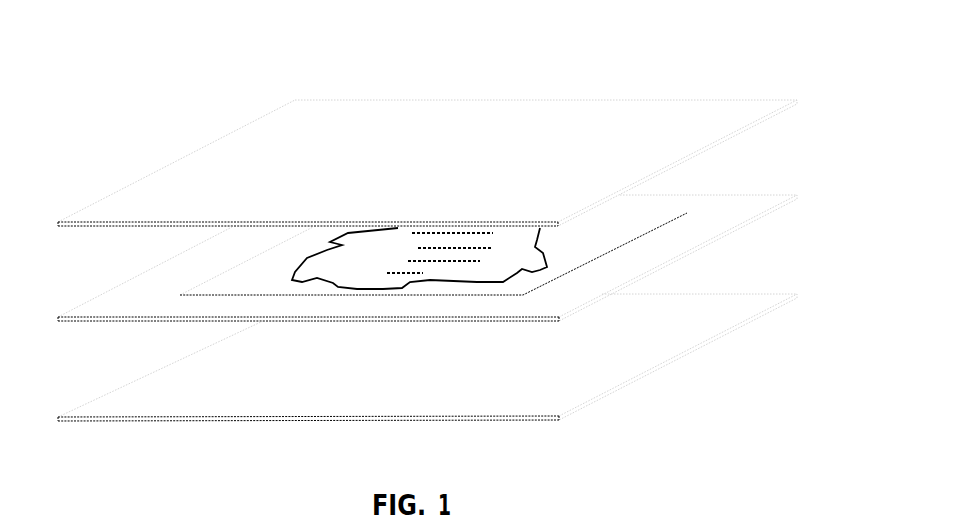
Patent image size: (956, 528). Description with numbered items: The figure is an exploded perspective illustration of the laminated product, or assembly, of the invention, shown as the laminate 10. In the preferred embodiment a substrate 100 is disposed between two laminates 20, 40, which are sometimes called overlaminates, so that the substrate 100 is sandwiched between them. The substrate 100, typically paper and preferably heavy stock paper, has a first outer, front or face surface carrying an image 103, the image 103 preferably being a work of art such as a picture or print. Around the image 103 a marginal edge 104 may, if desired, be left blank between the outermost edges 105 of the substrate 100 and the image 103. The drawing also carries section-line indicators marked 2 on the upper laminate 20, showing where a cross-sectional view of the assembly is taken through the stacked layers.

The laminate 10 is at (157, 48).
The laminate 20 is at (95, 216).
The laminate 40 is at (100, 407).
The substrate 100 is at (95, 312).
The image 103 is at (522, 268).
The marginal edge 104 is at (160, 290).
The outermost edges 105 is at (172, 260).
The section line 2- 2 is at (58, 169).